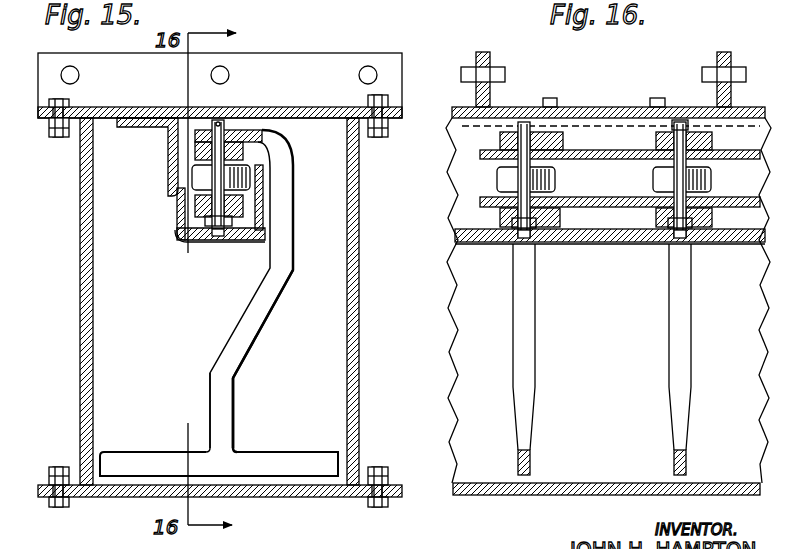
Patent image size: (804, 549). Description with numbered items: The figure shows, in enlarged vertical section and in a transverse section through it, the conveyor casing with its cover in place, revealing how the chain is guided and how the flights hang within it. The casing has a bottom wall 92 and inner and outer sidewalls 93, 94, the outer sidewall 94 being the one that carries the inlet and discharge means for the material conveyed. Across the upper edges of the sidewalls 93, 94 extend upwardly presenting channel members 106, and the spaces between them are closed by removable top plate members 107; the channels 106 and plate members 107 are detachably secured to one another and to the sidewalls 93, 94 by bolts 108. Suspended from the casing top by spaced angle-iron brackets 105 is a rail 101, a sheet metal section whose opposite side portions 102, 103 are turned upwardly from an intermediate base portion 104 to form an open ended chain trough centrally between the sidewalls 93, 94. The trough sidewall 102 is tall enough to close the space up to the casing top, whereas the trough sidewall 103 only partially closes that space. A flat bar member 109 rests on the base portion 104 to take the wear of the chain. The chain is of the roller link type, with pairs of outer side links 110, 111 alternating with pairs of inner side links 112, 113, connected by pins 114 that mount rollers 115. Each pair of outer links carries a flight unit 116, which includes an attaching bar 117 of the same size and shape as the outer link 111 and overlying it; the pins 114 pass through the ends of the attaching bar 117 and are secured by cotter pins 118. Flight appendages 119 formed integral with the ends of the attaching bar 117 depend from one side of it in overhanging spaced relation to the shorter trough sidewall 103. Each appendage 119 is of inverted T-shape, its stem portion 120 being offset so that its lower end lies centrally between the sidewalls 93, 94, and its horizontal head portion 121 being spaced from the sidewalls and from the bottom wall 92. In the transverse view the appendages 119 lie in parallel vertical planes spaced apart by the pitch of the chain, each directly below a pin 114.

In FIG. 15, the bottom wall 92 is at (286, 497).
In FIG. 16, the bottom wall 92 is at (606, 485).
In FIG. 15, the inner sidewall 93 is at (351, 322).
In FIG. 15, the outer sidewall 94 is at (86, 353).
In FIG. 15, the rail 101 is at (229, 182).
In FIG. 15, the chain trough sidewall 102 is at (178, 209).
In FIG. 15, the chain trough sidewall 103 is at (263, 209).
In FIG. 15, the base portion 104 is at (203, 244).
In FIG. 16, the base portion 104 is at (571, 244).
In FIG. 15, the angle-iron bracket 105 is at (170, 144).
In FIG. 15, the channel member 106 is at (312, 120).
In FIG. 16, the channel member 106 is at (606, 107).
In FIG. 16, the top plate member 107 is at (457, 107).
In FIG. 15, the bolt 108 is at (70, 66).
In FIG. 16, the bolt 108 is at (492, 68).
In FIG. 15, the flat bar member 109 is at (265, 232).
In FIG. 16, the flat bar member 109 is at (458, 233).
In FIG. 16, the outer side link 110 is at (625, 209).
In FIG. 16, the outer side link 111 is at (594, 152).
In FIG. 16, the inner side link 112 is at (462, 212).
In FIG. 16, the inner side link 113 is at (611, 140).
In FIG. 15, the pin 114 is at (207, 216).
In FIG. 16, the pin 114 is at (524, 122).
In FIG. 15, the roller 115 is at (252, 181).
In FIG. 16, the roller 115 is at (497, 183).
In FIG. 15, the flight unit 116 is at (333, 297).
In FIG. 15, the attaching bar 117 is at (257, 134).
In FIG. 15, the cotter pin 118 is at (215, 120).
In FIG. 16, the cotter pin 118 is at (516, 128).
In FIG. 15, the flight appendage 119 is at (214, 398).
In FIG. 16, the flight appendage 119 is at (528, 343).
In FIG. 15, the stem portion 120 is at (238, 355).
In FIG. 15, the head portion 121 is at (275, 458).